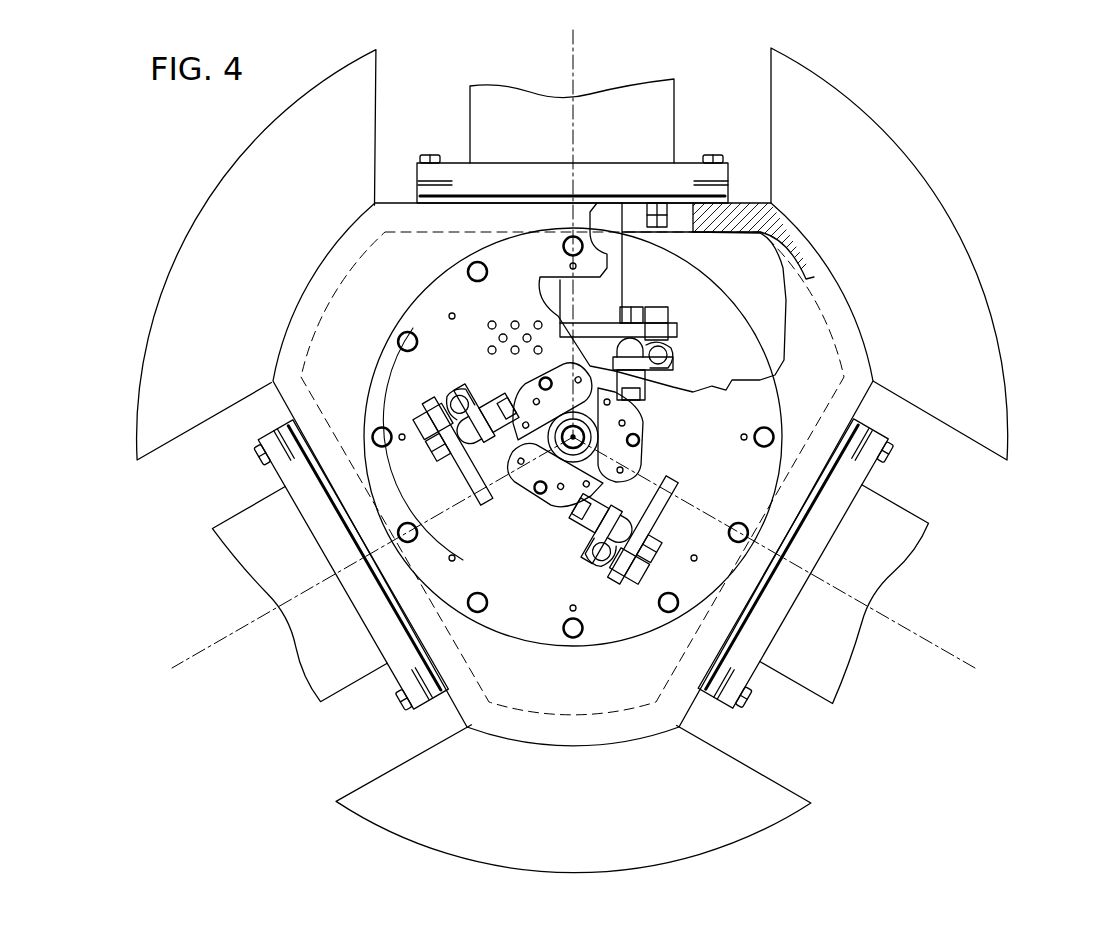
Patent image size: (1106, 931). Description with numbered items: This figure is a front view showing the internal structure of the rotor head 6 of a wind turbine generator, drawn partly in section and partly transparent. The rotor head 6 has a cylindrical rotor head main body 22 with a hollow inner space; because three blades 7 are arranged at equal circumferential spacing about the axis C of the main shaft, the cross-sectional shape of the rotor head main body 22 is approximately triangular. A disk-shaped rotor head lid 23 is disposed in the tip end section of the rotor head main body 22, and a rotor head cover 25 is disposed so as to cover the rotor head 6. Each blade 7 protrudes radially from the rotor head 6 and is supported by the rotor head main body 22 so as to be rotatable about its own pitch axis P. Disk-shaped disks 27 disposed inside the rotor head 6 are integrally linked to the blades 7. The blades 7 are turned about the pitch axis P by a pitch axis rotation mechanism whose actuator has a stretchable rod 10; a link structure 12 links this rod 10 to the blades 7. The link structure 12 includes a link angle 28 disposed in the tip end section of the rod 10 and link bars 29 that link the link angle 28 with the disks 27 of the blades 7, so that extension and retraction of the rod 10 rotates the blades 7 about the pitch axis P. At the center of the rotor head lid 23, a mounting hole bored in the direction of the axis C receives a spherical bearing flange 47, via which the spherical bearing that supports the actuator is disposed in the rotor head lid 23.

The rotor head 6 is at (822, 250).
The blade 7 is at (660, 117).
The rod 10 is at (598, 455).
The link structure 12 is at (682, 314).
The rotor head main body 22 is at (855, 335).
The rotor head lid 23 is at (617, 622).
The rotor head cover 25 is at (848, 103).
The disk 27 is at (640, 303).
The link angle 28 is at (548, 458).
The link bar 29 is at (684, 350).
The spherical bearing flange 47 is at (532, 387).
The axis C is at (592, 437).
The pitch axis P is at (574, 62).